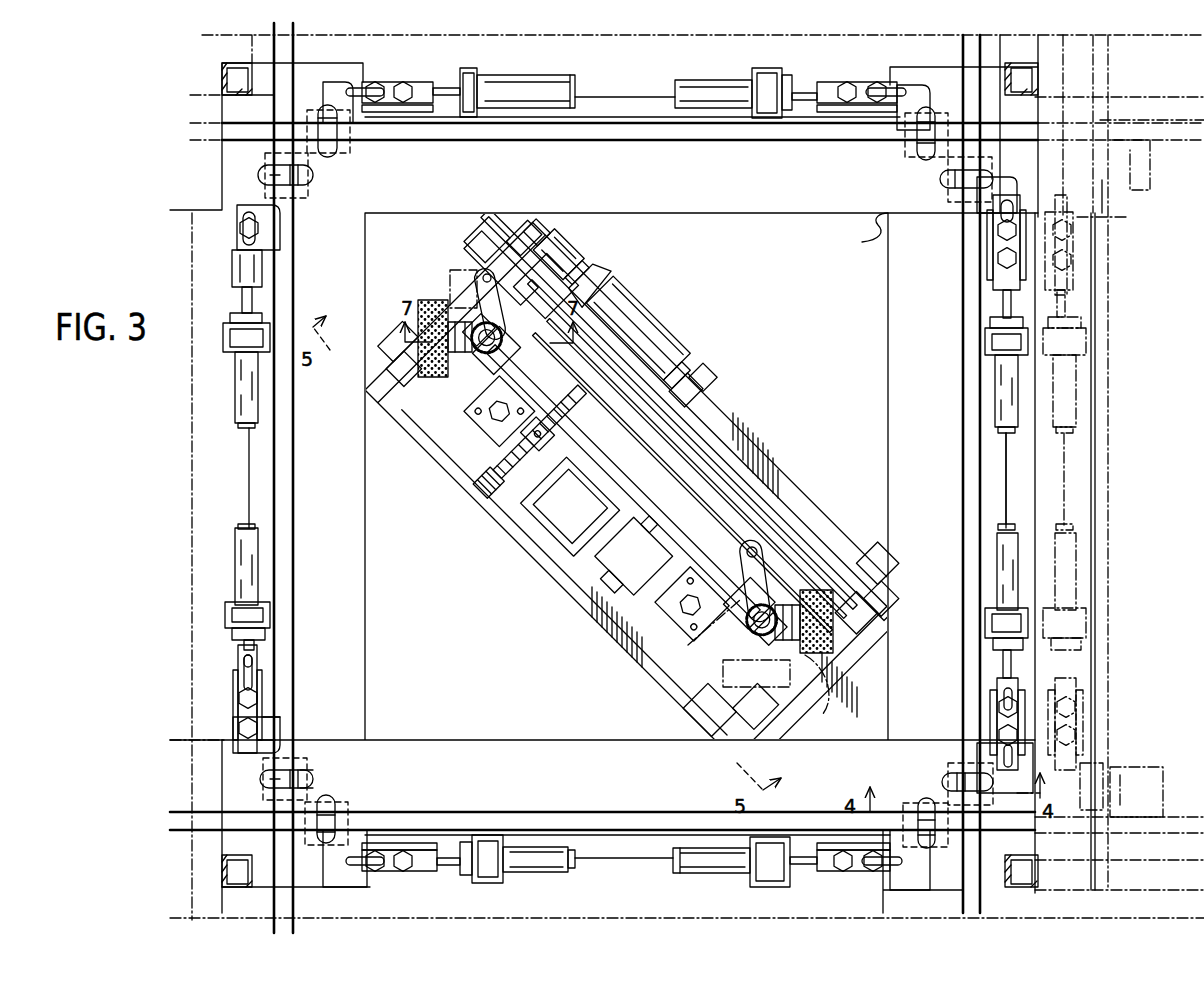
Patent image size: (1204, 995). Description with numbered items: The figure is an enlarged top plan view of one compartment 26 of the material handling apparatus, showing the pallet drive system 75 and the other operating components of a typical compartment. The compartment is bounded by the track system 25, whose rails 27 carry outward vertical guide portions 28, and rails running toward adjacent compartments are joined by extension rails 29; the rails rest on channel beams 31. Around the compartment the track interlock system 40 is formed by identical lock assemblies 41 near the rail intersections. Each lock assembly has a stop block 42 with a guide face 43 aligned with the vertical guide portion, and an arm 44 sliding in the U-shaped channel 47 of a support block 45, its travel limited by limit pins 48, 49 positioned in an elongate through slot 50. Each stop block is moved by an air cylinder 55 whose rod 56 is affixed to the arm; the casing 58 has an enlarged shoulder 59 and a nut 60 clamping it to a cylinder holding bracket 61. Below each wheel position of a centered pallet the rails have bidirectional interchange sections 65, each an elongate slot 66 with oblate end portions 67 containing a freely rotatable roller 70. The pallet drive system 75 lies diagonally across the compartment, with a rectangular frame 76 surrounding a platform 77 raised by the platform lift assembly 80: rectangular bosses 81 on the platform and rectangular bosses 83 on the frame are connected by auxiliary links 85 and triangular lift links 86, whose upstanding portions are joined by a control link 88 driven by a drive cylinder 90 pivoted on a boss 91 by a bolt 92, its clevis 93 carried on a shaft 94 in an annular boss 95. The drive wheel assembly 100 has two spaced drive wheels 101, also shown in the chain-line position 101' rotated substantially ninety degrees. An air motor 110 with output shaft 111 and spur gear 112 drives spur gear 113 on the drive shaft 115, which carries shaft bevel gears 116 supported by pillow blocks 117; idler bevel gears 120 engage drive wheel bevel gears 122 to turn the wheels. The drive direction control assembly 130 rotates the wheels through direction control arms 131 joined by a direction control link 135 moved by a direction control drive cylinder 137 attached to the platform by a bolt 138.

The track system 25 is at (985, 468).
The compartment 26 is at (618, 115).
The rail 27 is at (963, 384).
The vertical guide portion 28 is at (980, 406).
The extension rail 29 is at (965, 87).
The channel beam 31 is at (864, 236).
The track interlock system 40 is at (1122, 743).
The lock assembly 41 is at (805, 82).
The stop block 42 is at (243, 212).
The guide face 43 is at (910, 130).
The arm 44 is at (1005, 692).
The support block 45 is at (992, 712).
The U-shaped channel 47 is at (1000, 272).
The limit pin 48 is at (1070, 705).
The limit pin 49 is at (1068, 735).
The elongate through slot 50 is at (995, 762).
The air cylinder 55 is at (1020, 575).
The rod 56 is at (1005, 668).
The casing 58 is at (1005, 560).
The enlarged shoulder 59 is at (1000, 625).
The nut 60 is at (995, 645).
The cylinder holding bracket 61 is at (1028, 625).
The bidirectional interchange section 65 is at (915, 208).
The elongate slot 66 is at (982, 180).
The oblate end portion 67 is at (977, 197).
The roller 70 is at (942, 178).
The pallet drive system 75 is at (530, 660).
The frame 76 is at (600, 625).
The platform 77 is at (655, 665).
The platform lift assembly 80 is at (520, 560).
The rectangular boss 81 is at (408, 370).
The rectangular boss 83 is at (400, 345).
The auxiliary link 85 is at (400, 345).
The triangular lift link 86 is at (520, 238).
The control link 88 is at (808, 498).
The drive cylinder 90 is at (653, 332).
The boss 91 is at (698, 395).
The bolt 92 is at (690, 375).
The clevis 93 is at (590, 277).
The shaft 94 is at (562, 252).
The annular boss 95 is at (545, 235).
The drive wheel assembly 100 is at (430, 272).
The drive wheel 101 is at (622, 457).
The chain-line position of drive wheel 101' is at (635, 473).
The air motor 110 is at (530, 510).
The output shaft 111 is at (540, 487).
The spur gear 112 is at (470, 500).
The spur gear 113 is at (478, 447).
The drive shaft 115 is at (612, 462).
The shaft bevel gear 116 is at (487, 355).
The pillow block 117 is at (480, 417).
The idler bevel gear 120 is at (705, 678).
The drive wheel bevel gear 122 is at (455, 378).
The drive direction control assembly 130 is at (693, 467).
The direction control arm 131 is at (470, 243).
The direction control link 135 is at (655, 538).
The direction control drive cylinder 137 is at (643, 367).
The bolt 138 is at (603, 315).